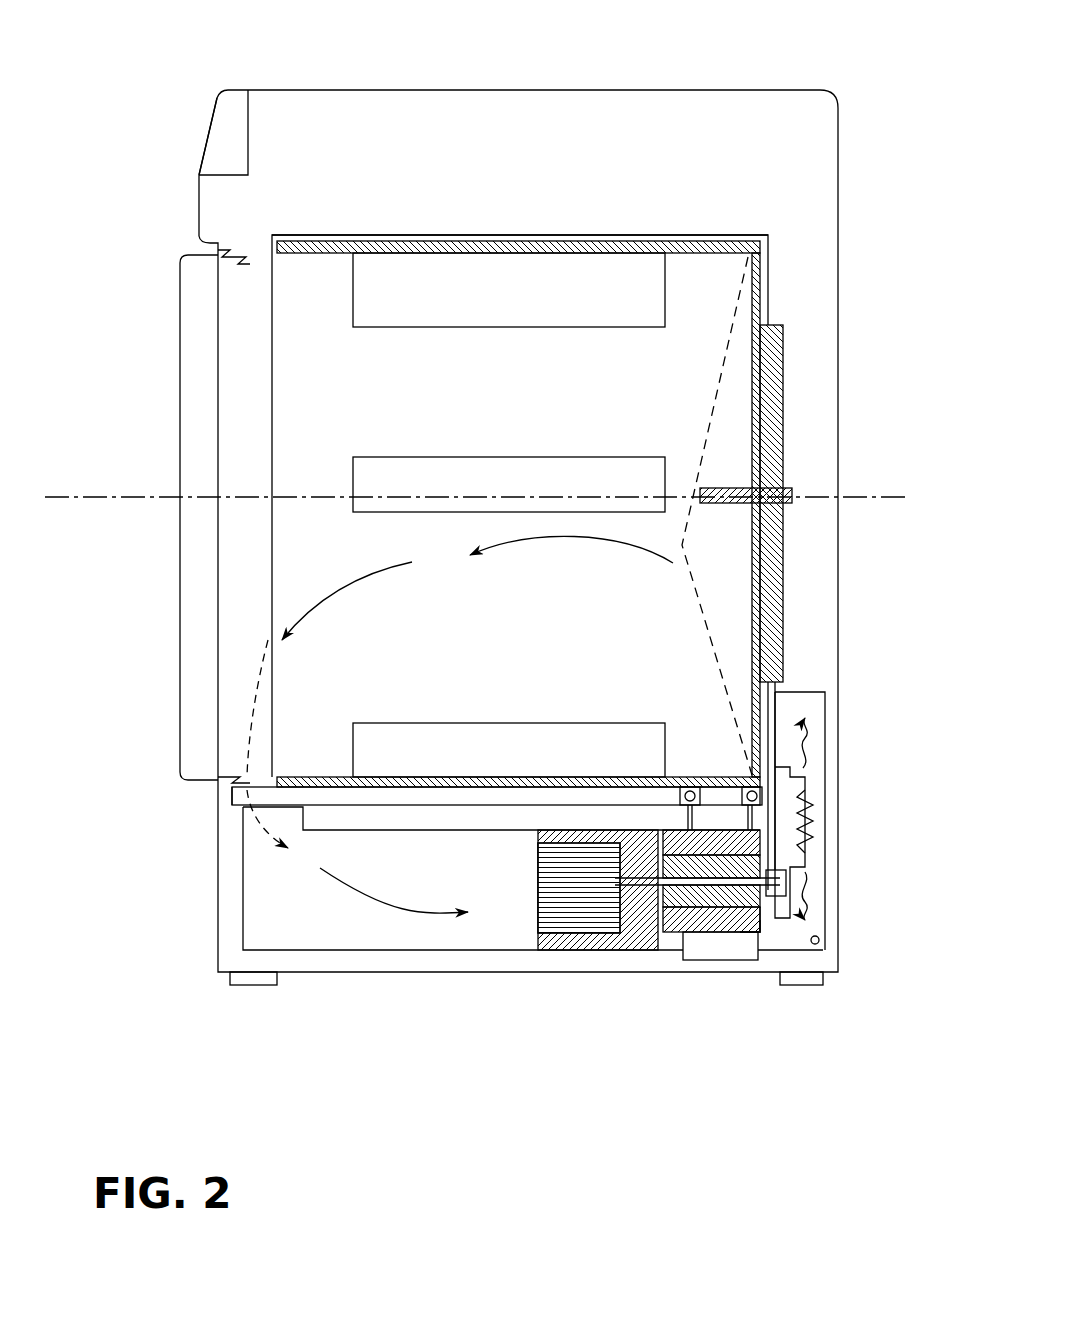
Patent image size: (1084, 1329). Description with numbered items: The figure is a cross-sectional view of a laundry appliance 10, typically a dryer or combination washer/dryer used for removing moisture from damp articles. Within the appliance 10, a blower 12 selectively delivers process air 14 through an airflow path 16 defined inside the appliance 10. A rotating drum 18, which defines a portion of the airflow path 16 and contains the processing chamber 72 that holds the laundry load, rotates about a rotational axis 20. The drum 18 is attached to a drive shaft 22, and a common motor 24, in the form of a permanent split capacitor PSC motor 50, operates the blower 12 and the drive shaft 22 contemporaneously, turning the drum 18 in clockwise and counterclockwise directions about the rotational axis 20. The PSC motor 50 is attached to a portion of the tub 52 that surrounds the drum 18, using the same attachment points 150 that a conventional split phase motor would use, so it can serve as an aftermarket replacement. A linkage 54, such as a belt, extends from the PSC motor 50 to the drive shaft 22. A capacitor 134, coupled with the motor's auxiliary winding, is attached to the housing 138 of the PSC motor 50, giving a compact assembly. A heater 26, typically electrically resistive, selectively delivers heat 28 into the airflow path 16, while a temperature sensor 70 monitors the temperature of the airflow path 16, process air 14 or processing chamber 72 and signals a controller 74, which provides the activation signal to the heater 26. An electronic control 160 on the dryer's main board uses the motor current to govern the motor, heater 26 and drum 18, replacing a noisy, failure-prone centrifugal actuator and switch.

The laundry appliance 10 is at (866, 213).
The blower 12 is at (615, 958).
The process air 14 is at (157, 517).
The airflow path 16 is at (243, 865).
The rotating drum 18 is at (295, 405).
The rotational axis 20 is at (133, 497).
The drive shaft 22 is at (715, 492).
The common motor 24 is at (672, 940).
The heater 26 is at (818, 795).
The heat 28 is at (812, 748).
The PSC motor 50 is at (763, 933).
The tub 52 is at (623, 232).
The linkage 54 is at (775, 718).
The temperature sensor 70 is at (818, 938).
The processing chamber 72 is at (658, 378).
The controller 74 is at (226, 125).
The capacitor 134 is at (740, 958).
The housing 138 is at (775, 928).
The attachment points 150 is at (672, 812).
The electronic control 160 is at (203, 145).